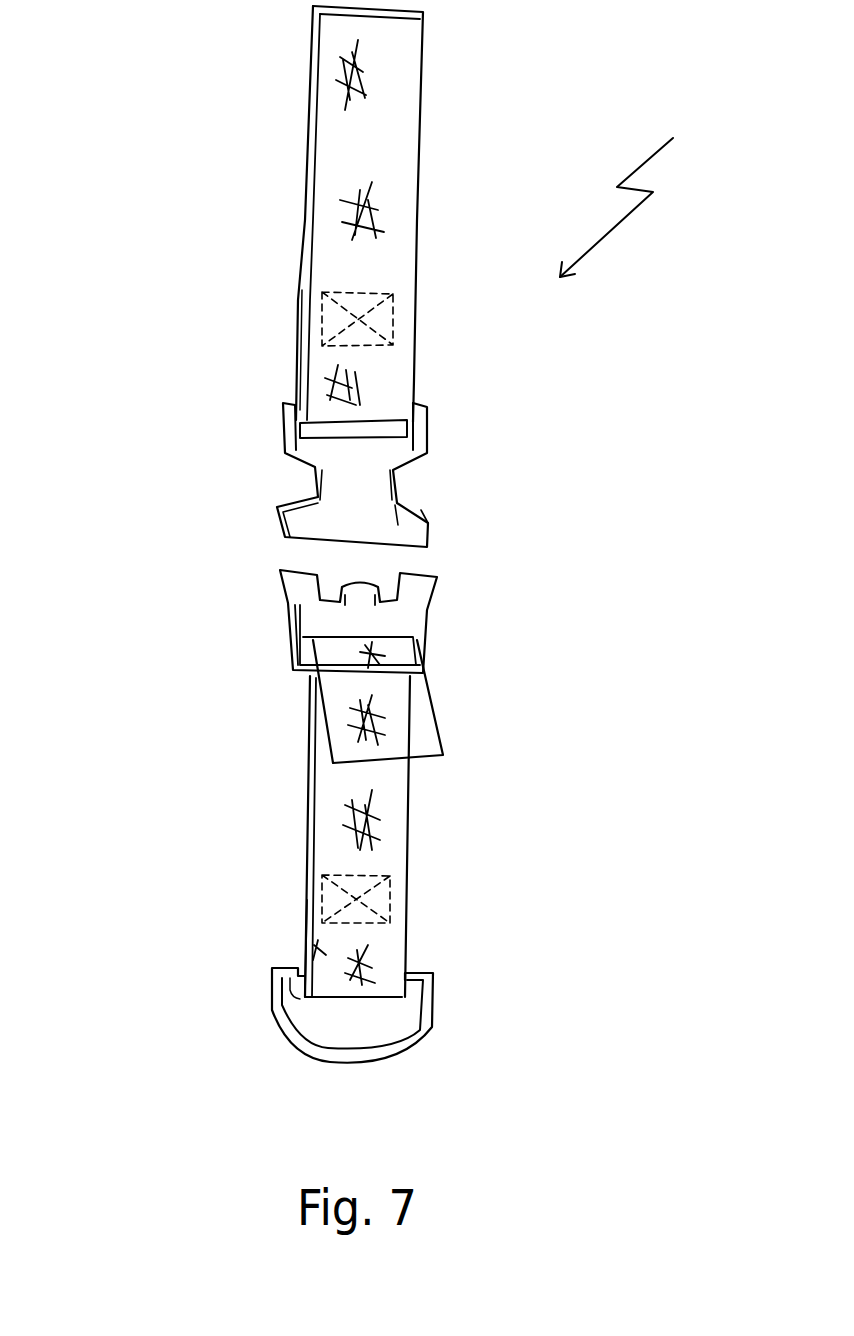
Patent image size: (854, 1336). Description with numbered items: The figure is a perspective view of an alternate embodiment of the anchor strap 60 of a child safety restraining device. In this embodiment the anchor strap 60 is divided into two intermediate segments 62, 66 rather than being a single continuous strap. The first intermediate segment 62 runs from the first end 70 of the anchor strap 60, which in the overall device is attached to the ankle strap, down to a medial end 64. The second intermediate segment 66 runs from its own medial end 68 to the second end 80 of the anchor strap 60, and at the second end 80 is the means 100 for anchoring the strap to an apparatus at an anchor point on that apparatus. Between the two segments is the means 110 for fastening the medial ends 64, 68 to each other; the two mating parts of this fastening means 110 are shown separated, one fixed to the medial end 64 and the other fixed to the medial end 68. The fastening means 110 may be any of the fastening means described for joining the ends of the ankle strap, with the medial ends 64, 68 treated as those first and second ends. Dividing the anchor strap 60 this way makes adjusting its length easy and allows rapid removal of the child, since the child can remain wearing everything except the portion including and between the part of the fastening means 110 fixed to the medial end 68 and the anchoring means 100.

The anchor strap 60 is at (645, 193).
The intermediate segment 62 is at (330, 203).
The medial end 64 is at (400, 382).
The intermediate segment 66 is at (327, 810).
The medial end 68 is at (417, 700).
The first end 70 is at (407, 40).
The second end 80 is at (395, 940).
The means for anchoring 100 is at (458, 1005).
The means for fastening 110 is at (250, 523).